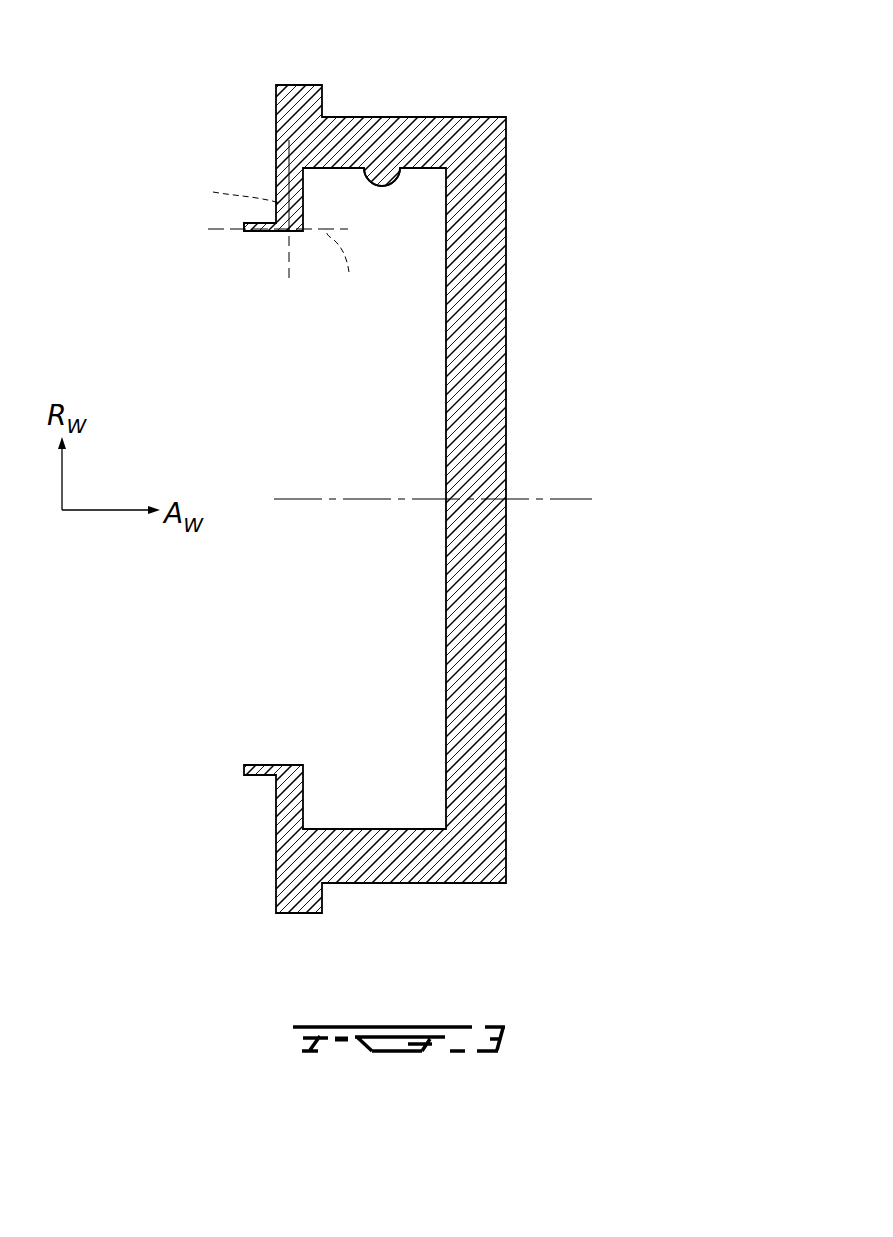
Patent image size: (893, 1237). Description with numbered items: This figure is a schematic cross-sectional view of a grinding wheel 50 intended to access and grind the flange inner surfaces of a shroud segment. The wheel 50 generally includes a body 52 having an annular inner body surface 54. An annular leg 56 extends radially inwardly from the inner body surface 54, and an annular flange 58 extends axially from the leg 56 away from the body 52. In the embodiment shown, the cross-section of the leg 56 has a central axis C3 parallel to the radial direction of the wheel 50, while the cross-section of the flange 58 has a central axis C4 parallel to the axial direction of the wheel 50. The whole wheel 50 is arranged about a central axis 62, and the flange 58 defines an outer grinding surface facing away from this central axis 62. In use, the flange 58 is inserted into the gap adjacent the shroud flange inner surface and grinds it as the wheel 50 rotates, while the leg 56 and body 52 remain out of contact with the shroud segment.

The grinding wheel 50 is at (588, 181).
The body 52 is at (508, 142).
The annular inner body surface 54 is at (390, 185).
The annular leg 56 is at (287, 182).
The annular flange 58 is at (259, 232).
The central axis 62 is at (570, 498).
The central axis of the leg cross-section C3 is at (234, 198).
The central axis of the flange cross-section C4 is at (344, 273).